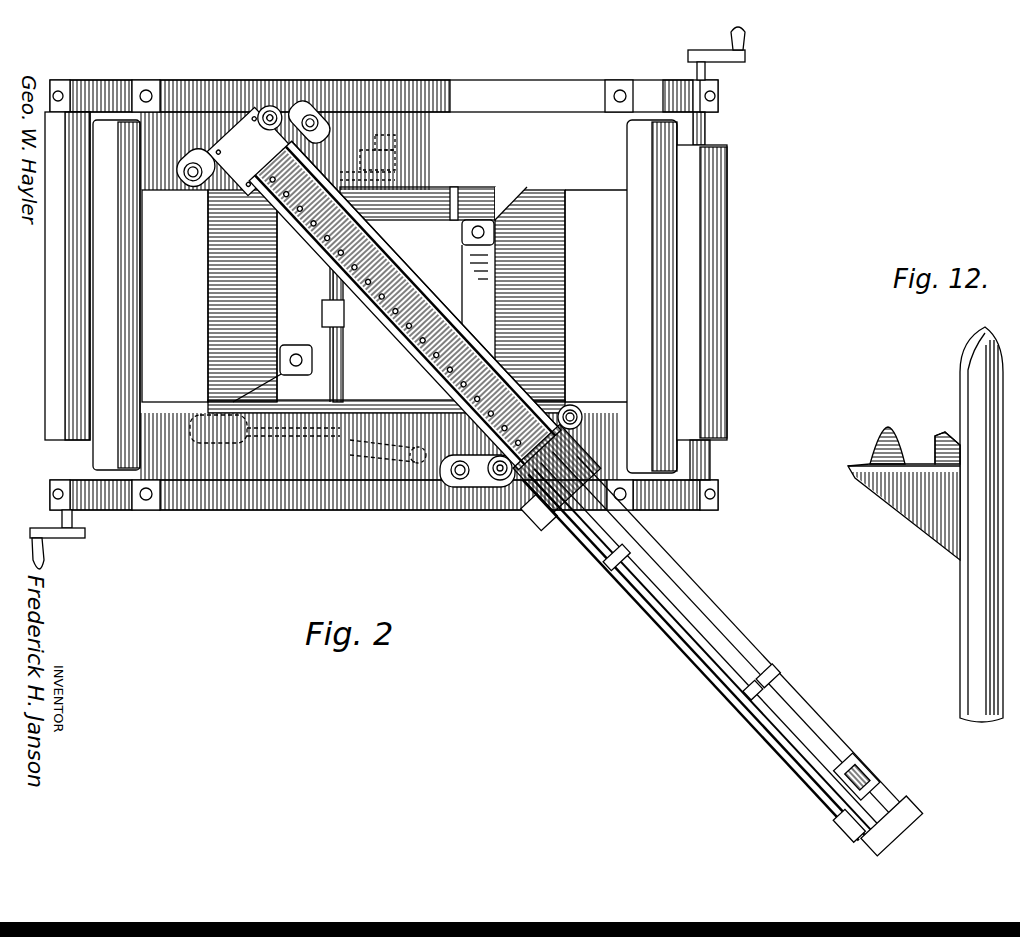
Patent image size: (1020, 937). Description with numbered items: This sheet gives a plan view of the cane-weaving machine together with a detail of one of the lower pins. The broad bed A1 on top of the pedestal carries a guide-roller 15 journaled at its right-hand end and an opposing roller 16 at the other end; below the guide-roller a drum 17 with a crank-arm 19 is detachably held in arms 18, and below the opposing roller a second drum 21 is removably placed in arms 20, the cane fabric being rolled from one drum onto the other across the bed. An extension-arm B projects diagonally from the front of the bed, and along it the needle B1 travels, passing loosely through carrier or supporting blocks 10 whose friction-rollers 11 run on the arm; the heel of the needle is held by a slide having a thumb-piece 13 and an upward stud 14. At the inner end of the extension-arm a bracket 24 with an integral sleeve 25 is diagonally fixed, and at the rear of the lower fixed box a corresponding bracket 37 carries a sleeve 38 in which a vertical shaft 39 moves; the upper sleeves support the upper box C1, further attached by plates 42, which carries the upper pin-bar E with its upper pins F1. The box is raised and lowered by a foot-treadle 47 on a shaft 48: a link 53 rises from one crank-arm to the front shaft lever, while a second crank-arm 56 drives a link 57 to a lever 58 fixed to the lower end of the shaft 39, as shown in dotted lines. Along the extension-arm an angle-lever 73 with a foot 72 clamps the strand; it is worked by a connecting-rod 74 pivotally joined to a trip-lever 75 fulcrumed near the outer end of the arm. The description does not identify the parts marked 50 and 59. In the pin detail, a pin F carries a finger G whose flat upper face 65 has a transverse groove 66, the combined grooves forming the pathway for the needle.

In FIG. 2, the arms 20 is at (60, 80).
In FIG. 2, the vertical shaft 39 is at (178, 111).
In FIG. 2, the sleeve 38 is at (225, 116).
In FIG. 2, the bracket 37 is at (110, 150).
In FIG. 2, the plates 42 is at (251, 151).
In FIG. 2, the lever 58 is at (360, 136).
In FIG. 2, the link 57 is at (396, 152).
In FIG. 2, the second crank-arm 56 is at (396, 172).
In FIG. 2, the crank-arm 19 is at (46, 335).
In FIG. 2, the opposing roller 16 is at (132, 292).
In FIG. 2, the plunger 50 is at (322, 311).
In FIG. 2, the shaft 48 is at (344, 346).
In FIG. 2, the upper pins F1 is at (424, 287).
In FIG. 2, the upper pin-bar E is at (411, 300).
In FIG. 2, the upper box C1 is at (462, 345).
In FIG. 2, the guide-roller 15 is at (627, 312).
In FIG. 2, the drum 17 is at (710, 397).
In FIG. 2, the second drum 21 is at (76, 540).
In FIG. 2, the foot-treadle 47 is at (236, 440).
In FIG. 2, the link 53 is at (372, 455).
In FIG. 2, the bed A1 is at (453, 468).
In FIG. 2, the bracket 24 is at (574, 406).
In FIG. 2, the foot 72 is at (571, 454).
In FIG. 2, the sleeve 25 is at (502, 482).
In FIG. 2, the angle-lever 73 is at (539, 529).
In FIG. 2, the friction-rollers 11 is at (663, 632).
In FIG. 2, the arms 18 is at (698, 510).
In FIG. 2, the rod 59 is at (743, 610).
In FIG. 2, the extension-arm B is at (755, 613).
In FIG. 2, the connecting-rod 74 is at (676, 673).
In FIG. 2, the carrier or supporting blocks 10 is at (689, 661).
In FIG. 2, the needle B1 is at (712, 607).
In FIG. 2, the stud 14 is at (847, 770).
In FIG. 2, the thumb-piece 13 is at (893, 797).
In FIG. 2, the trip-lever 75 is at (788, 816).
In FIG. 12, the upper faces 65 is at (882, 437).
In FIG. 12, the transverse grooves 66 is at (930, 438).
In FIG. 12, the fingers G is at (882, 488).
In FIG. 12, the pins F is at (960, 607).